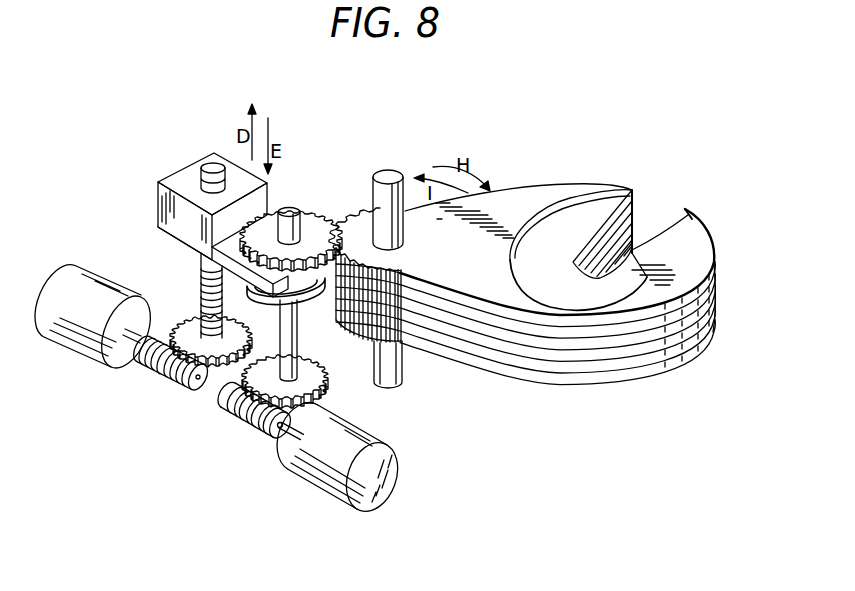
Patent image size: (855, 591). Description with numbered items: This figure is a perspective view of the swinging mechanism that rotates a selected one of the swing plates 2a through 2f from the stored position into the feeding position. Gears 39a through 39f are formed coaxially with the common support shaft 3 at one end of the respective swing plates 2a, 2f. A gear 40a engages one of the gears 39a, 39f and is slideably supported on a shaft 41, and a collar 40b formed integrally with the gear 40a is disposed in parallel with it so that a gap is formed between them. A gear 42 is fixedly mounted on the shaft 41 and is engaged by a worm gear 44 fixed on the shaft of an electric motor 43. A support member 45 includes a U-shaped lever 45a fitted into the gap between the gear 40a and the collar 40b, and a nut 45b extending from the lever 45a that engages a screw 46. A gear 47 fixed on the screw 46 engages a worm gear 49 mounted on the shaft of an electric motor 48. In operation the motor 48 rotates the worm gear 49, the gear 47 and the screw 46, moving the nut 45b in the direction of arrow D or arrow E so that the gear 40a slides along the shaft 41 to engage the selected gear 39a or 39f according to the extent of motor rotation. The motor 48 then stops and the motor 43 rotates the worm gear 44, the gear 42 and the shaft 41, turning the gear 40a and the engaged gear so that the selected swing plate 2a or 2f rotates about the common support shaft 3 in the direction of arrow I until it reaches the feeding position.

The swing plate 2a is at (532, 186).
The swing plate 2f is at (684, 356).
The common support shaft 3 is at (388, 170).
The gear 39a is at (363, 217).
The gear 39f is at (402, 338).
The gear 40a is at (255, 228).
The collar 40b is at (301, 302).
The shaft 41 is at (297, 347).
The gear 42 is at (328, 397).
The electric motor 43 is at (307, 480).
The worm gear 44 is at (242, 424).
The support member 45 is at (175, 272).
The U-shaped lever 45a is at (250, 284).
The nut 45b is at (158, 213).
The screw 46 is at (205, 155).
The gear 47 is at (177, 320).
The electric motor 48 is at (78, 348).
The worm gear 49 is at (173, 371).